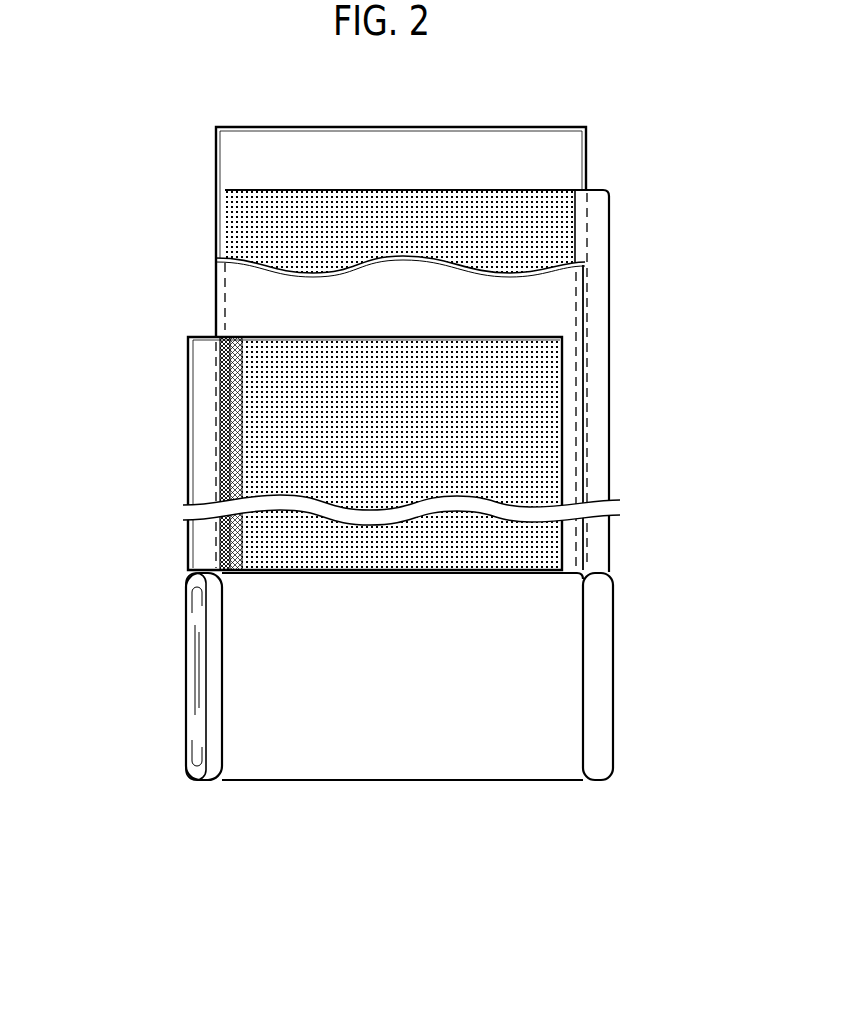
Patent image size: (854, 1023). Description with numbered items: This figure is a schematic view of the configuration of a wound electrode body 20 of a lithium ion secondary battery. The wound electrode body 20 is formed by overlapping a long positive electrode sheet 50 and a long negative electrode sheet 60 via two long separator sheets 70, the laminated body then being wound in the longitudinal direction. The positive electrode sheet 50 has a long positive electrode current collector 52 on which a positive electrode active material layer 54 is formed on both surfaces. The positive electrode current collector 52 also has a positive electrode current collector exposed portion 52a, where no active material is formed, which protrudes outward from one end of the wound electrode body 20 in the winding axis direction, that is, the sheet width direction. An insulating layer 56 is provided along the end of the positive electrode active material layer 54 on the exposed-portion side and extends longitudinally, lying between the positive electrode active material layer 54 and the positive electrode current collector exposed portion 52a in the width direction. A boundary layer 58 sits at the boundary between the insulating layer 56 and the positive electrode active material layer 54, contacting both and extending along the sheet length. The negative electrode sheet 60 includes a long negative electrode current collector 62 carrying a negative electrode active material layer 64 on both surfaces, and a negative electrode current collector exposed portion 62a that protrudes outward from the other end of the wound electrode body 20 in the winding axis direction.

The wound electrode body 20 is at (473, 769).
The positive electrode sheet 50 is at (179, 418).
The positive electrode current collector 52 is at (190, 492).
The positive electrode current collector exposed portion 52a is at (205, 455).
The positive electrode active material layer 54 is at (262, 358).
The insulating layer 56 is at (220, 531).
The boundary layer 58 is at (225, 554).
The negative electrode sheet 60 is at (618, 282).
The negative electrode current collector 62 is at (610, 387).
The negative electrode current collector exposed portion 62a is at (597, 332).
The negative electrode active material layer 64 is at (570, 222).
The separator sheet 70 is at (237, 167).